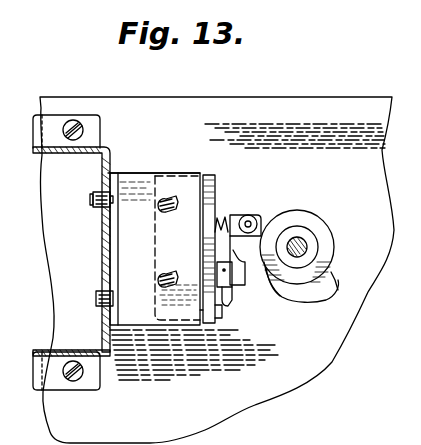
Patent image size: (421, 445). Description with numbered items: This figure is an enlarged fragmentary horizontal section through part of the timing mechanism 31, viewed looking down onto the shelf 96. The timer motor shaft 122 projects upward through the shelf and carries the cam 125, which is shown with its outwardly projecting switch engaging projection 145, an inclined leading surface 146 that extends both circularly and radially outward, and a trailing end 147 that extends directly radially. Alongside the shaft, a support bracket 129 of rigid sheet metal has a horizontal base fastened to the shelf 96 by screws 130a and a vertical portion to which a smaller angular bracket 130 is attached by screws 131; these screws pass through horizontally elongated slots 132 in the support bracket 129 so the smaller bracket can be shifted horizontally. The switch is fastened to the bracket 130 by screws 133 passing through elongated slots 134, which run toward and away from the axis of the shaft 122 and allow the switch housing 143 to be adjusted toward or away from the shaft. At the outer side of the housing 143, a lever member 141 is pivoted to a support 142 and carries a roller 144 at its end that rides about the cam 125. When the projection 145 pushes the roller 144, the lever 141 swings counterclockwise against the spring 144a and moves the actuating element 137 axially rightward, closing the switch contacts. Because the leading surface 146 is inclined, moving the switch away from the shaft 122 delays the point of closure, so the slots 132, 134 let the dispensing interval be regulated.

The timing mechanism 31 is at (132, 124).
The shelf 96 is at (318, 105).
The timer motor shaft 122 is at (307, 245).
The cam 125 is at (323, 213).
The support bracket 129 is at (100, 152).
The angular bracket 130 is at (154, 178).
The screw 130a is at (76, 125).
The screw 131 is at (112, 188).
The horizontally elongated slot 132 is at (92, 196).
The screw 133 is at (176, 197).
The elongated slot 134 is at (153, 208).
The actuating element 137 is at (222, 318).
The lever member 141 is at (230, 272).
The support 142 is at (230, 282).
The switch housing 143 is at (214, 186).
The roller 144 is at (252, 215).
The spring 144a is at (221, 217).
The switch engaging projection 145 is at (308, 300).
The inclined leading surface 146 is at (278, 294).
The trailing end 147 is at (335, 284).